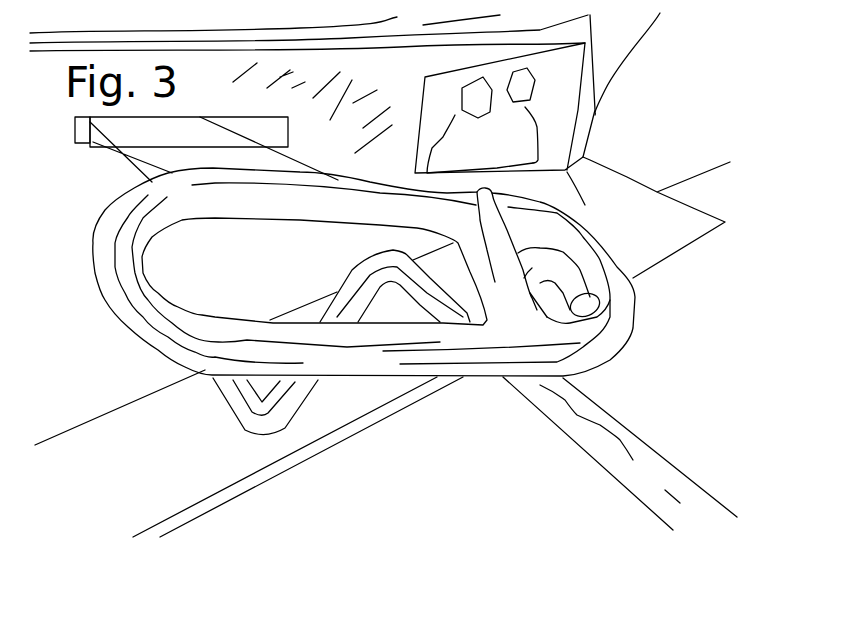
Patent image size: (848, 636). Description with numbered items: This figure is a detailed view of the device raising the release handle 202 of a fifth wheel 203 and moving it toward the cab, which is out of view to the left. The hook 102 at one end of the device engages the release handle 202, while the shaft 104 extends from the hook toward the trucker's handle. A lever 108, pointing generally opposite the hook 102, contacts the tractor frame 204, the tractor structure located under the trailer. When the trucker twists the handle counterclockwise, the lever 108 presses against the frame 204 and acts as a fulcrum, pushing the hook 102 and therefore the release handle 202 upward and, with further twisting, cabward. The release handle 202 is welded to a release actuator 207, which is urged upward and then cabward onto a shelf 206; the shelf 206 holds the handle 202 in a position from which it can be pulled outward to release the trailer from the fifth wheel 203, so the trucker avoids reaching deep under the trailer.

The hook 102 is at (568, 274).
The shaft 104 is at (662, 480).
The lever 108 is at (343, 288).
The release handle 202 is at (290, 212).
The fifth wheel 203 is at (415, 82).
The tractor frame 204 is at (657, 226).
The shelf 206 is at (88, 148).
The release actuator 207 is at (210, 153).